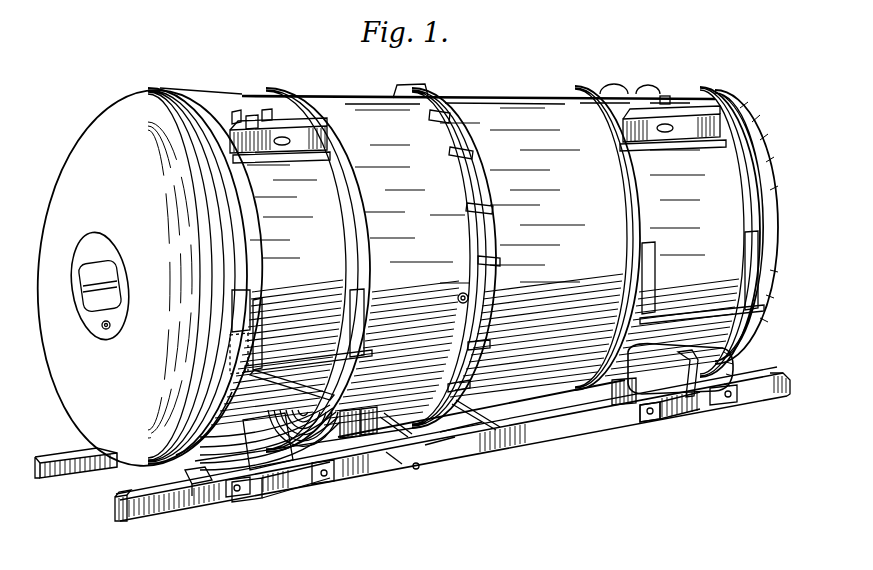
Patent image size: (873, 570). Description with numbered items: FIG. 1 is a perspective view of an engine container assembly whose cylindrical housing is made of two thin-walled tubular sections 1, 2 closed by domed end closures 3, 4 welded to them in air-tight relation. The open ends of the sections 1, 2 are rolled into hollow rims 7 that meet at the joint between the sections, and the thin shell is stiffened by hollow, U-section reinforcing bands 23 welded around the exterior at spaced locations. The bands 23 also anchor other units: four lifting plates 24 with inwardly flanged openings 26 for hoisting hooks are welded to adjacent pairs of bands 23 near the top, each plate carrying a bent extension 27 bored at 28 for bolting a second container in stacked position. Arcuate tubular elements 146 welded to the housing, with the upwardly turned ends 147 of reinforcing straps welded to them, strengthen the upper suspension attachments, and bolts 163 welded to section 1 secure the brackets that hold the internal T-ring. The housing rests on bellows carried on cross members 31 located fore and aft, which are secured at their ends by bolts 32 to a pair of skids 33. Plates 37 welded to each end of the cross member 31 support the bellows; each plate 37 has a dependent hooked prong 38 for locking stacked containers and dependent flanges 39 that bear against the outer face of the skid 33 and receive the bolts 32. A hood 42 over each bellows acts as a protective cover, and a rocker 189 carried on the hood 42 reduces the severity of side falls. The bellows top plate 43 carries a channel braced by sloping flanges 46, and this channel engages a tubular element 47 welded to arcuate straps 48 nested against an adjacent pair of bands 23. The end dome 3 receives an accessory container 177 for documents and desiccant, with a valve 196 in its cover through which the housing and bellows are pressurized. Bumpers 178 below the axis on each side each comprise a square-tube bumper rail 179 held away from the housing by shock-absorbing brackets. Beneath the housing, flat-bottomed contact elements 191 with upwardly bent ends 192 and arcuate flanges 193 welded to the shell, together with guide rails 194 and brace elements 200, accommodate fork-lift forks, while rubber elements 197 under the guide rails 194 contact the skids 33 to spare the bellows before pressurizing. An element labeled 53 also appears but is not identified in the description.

The tubular section 1 is at (358, 98).
The tubular section 2 is at (505, 99).
The domed end closure 3 is at (70, 168).
The domed end closure 4 is at (768, 178).
The hollow rim 7 is at (470, 195).
The hollow reinforcing band 23 is at (249, 247).
The lifting plate 24 is at (236, 135).
The inwardly flanged opening 26 is at (278, 128).
The bent extension 27 is at (264, 110).
The bore 28 is at (235, 111).
The cross member 31 is at (166, 478).
The bolt 32 is at (262, 497).
The skid 33 is at (100, 470).
The plate 37 is at (242, 500).
The hooked prong 38 is at (187, 484).
The dependent flange 39 is at (237, 498).
The hood 42 is at (732, 361).
The top plate of the bellows 43 is at (287, 455).
The sloping flange 46 is at (296, 463).
The tubular element 47 is at (308, 392).
The arcuate strap 48 is at (205, 423).
The spacer block 53 is at (352, 436).
The arcuate tubular element 146 is at (612, 92).
The upwardly turned end 147 is at (666, 96).
The bolt 163 is at (465, 293).
The accessory container 177 is at (118, 220).
The bumper 178 is at (262, 320).
The bumper rail 179 is at (281, 362).
The rocker 189 is at (684, 378).
The flat-bottomed contact element 191 is at (393, 463).
The upwardly bent end 192 is at (370, 435).
The arcuate flange 193 is at (417, 469).
The guide rail 194 is at (410, 432).
The valve 196 is at (111, 326).
The rubber element 197 is at (436, 455).
The brace element 200 is at (446, 433).